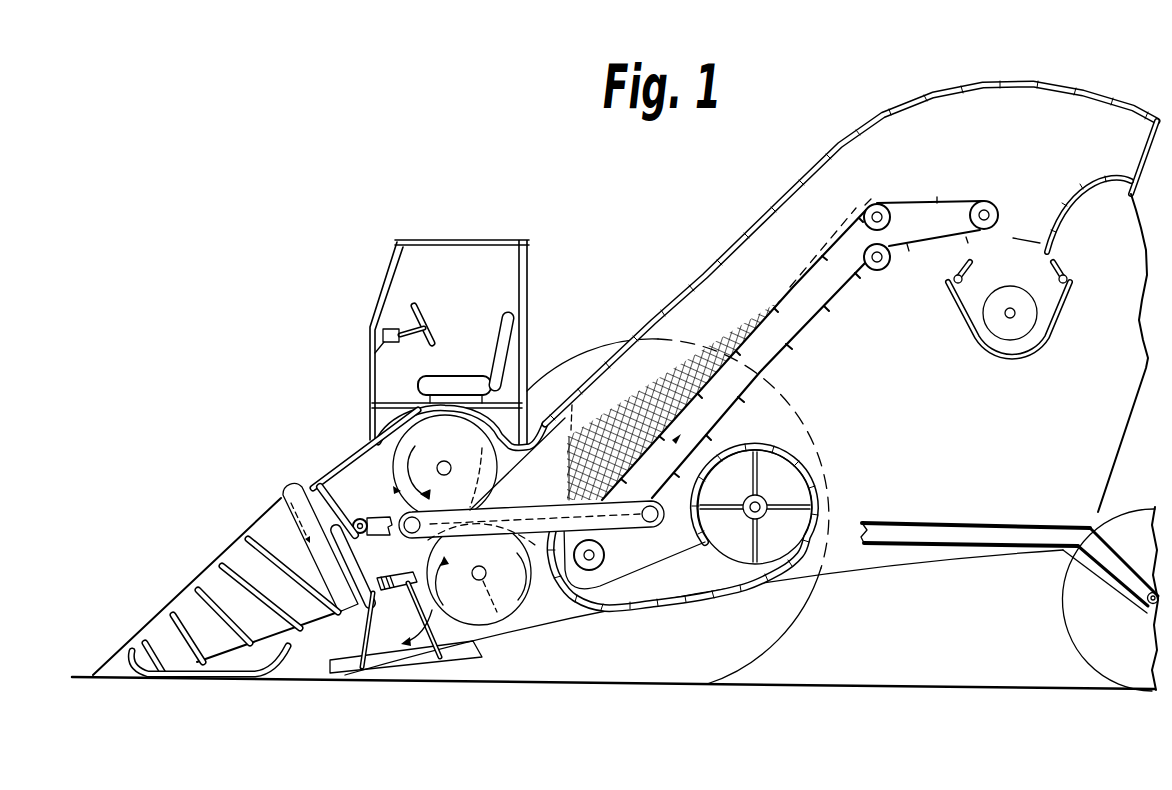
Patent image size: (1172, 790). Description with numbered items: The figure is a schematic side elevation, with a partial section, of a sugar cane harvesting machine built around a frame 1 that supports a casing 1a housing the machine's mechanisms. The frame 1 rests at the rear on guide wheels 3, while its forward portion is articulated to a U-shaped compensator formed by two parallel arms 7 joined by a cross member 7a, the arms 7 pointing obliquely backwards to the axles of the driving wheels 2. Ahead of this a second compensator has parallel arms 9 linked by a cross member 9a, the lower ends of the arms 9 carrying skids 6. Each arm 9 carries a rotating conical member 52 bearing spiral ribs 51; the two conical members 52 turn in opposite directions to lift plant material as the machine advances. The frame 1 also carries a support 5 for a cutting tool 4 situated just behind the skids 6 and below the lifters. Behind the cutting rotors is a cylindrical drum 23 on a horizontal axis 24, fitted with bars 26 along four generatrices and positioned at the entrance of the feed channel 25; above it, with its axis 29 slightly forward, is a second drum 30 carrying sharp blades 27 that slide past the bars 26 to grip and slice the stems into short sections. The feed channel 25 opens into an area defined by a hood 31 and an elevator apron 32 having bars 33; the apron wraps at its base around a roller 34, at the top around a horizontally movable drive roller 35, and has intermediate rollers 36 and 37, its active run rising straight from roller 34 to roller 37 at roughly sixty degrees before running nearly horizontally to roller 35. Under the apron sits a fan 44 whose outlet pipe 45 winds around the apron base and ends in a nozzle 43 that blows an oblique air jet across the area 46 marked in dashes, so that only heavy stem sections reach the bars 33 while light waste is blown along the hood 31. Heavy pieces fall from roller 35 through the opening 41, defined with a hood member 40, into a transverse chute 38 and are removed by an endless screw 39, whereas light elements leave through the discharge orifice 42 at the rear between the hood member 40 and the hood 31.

The frame 1 is at (970, 546).
The casing 1a is at (1105, 437).
The driving wheels 2 is at (763, 642).
The guide wheels 3 is at (1073, 623).
The cutting tool 4 is at (391, 652).
The support 5 is at (370, 600).
The skids 6 is at (218, 677).
The arms 7 is at (526, 516).
The cross member 7a is at (372, 515).
The arms 9 is at (333, 528).
The cross member 9a is at (357, 517).
The drum 23 is at (505, 602).
The axis 24 is at (536, 555).
The feed channel 25 is at (537, 600).
The bars 26 is at (492, 626).
The blades 27 is at (378, 463).
The axis 29 is at (458, 453).
The drum 30 is at (383, 432).
The hood 31 is at (1106, 95).
The elevator apron 32 is at (838, 236).
The bars 33 is at (822, 255).
The roller 34 is at (622, 538).
The drive roller 35 is at (994, 205).
The intermediate roller 36 is at (885, 270).
The intermediate roller 37 is at (878, 203).
The transverse chute 38 is at (1057, 316).
The endless screw 39 is at (1017, 327).
The hood member 40 is at (1067, 208).
The opening 41 is at (1013, 238).
The discharge orifice 42 is at (1143, 161).
The nozzle 43 is at (567, 507).
The fan 44 is at (800, 525).
The outlet pipe 45 is at (697, 599).
The area 46 is at (690, 372).
The spiral ribs 51 is at (173, 617).
The conical member 52 is at (217, 586).